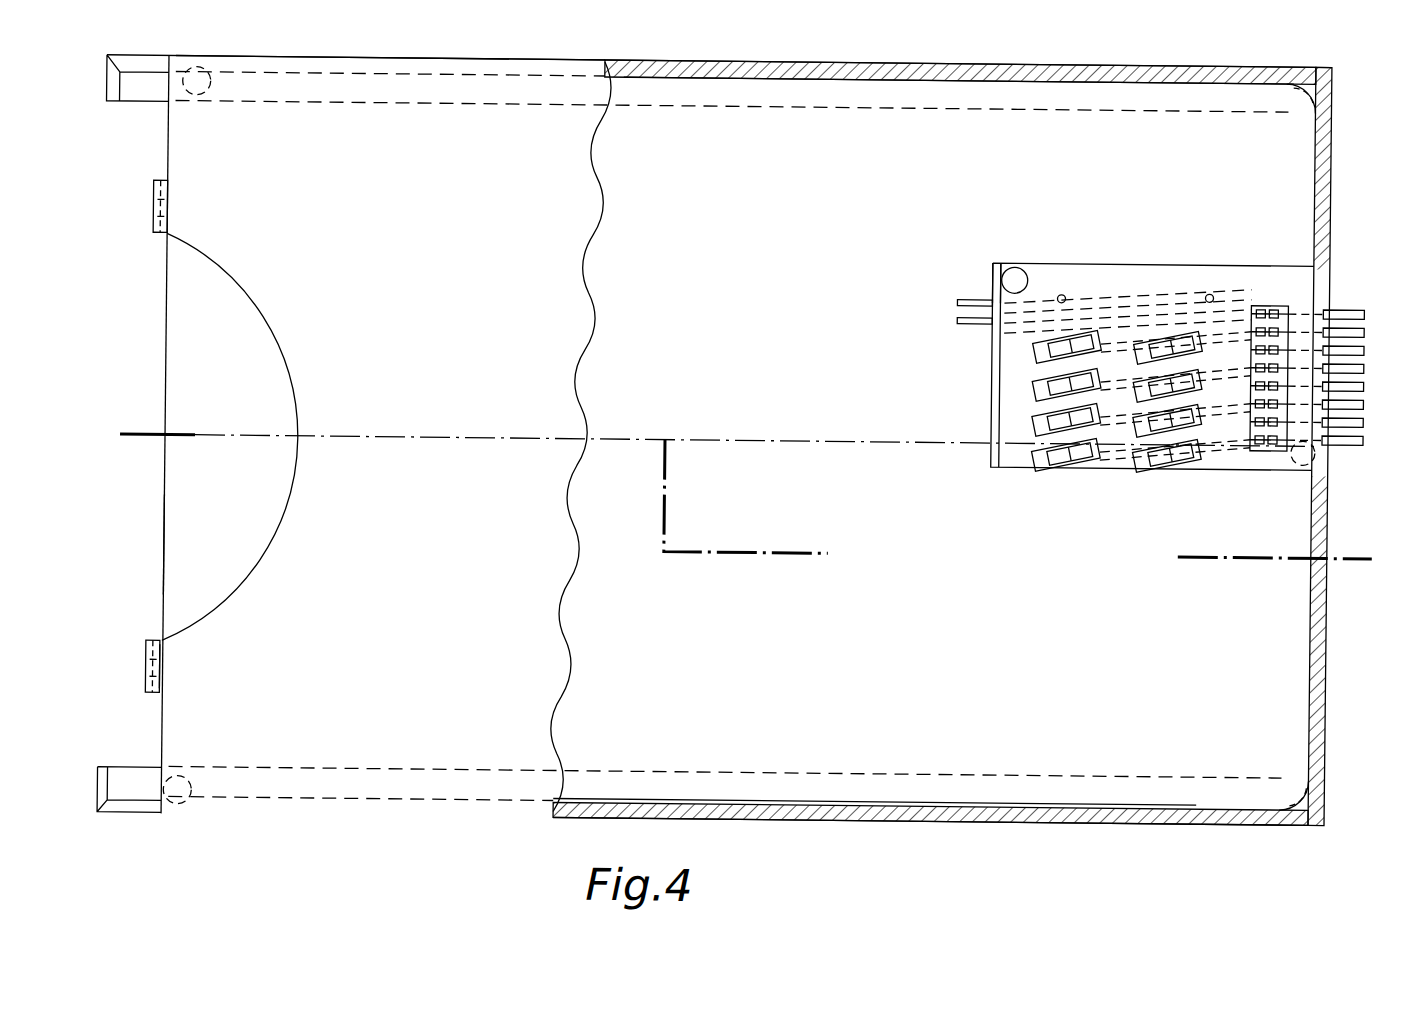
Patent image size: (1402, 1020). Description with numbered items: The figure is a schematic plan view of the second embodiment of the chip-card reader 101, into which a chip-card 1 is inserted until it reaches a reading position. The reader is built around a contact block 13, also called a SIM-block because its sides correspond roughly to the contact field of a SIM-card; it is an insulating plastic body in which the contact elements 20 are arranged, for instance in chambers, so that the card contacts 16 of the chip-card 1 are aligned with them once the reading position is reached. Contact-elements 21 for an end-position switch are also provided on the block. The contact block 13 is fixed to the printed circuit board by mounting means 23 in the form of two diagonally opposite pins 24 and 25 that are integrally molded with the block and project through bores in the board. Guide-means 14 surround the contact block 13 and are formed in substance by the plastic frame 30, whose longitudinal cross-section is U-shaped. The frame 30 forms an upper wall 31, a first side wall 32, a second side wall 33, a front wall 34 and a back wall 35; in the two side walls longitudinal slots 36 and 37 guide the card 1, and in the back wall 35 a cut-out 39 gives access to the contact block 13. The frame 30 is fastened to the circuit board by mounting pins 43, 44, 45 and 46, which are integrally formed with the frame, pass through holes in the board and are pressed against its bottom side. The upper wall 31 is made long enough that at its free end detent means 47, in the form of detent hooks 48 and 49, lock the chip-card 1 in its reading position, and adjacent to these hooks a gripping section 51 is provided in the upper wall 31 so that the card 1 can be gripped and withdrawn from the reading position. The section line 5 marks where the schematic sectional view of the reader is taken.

The chip-card 1 is at (181, 577).
The section line 5— 5 is at (128, 452).
The contact block 13 is at (1138, 256).
The guide-means 14 is at (1194, 824).
The card contacts 16 is at (1065, 441).
The contact elements 20 is at (1190, 442).
The contact-elements for an end-position switch 21 is at (958, 318).
The mounting means 23 is at (1010, 257).
The pin 24 is at (1028, 272).
The pin 25 is at (1298, 456).
The frame 30 is at (739, 458).
The upper wall 31 is at (449, 160).
The first side wall 32 is at (831, 62).
The second side wall 33 is at (909, 811).
The front wall 34 is at (165, 148).
The back wall 35 is at (1325, 698).
The longitudinal slot 36 is at (946, 79).
The longitudinal slot 37 is at (957, 802).
The cut-out 39 is at (1316, 279).
The pin 43 is at (1296, 94).
The pin 44 is at (1294, 784).
The pin 45 is at (196, 100).
The pin 46 is at (194, 790).
The detent means 47 is at (172, 665).
The detent hook 48 is at (150, 681).
The detent hook 49 is at (151, 212).
The gripping section 51 is at (243, 298).
The chip-card reader 101 is at (150, 528).